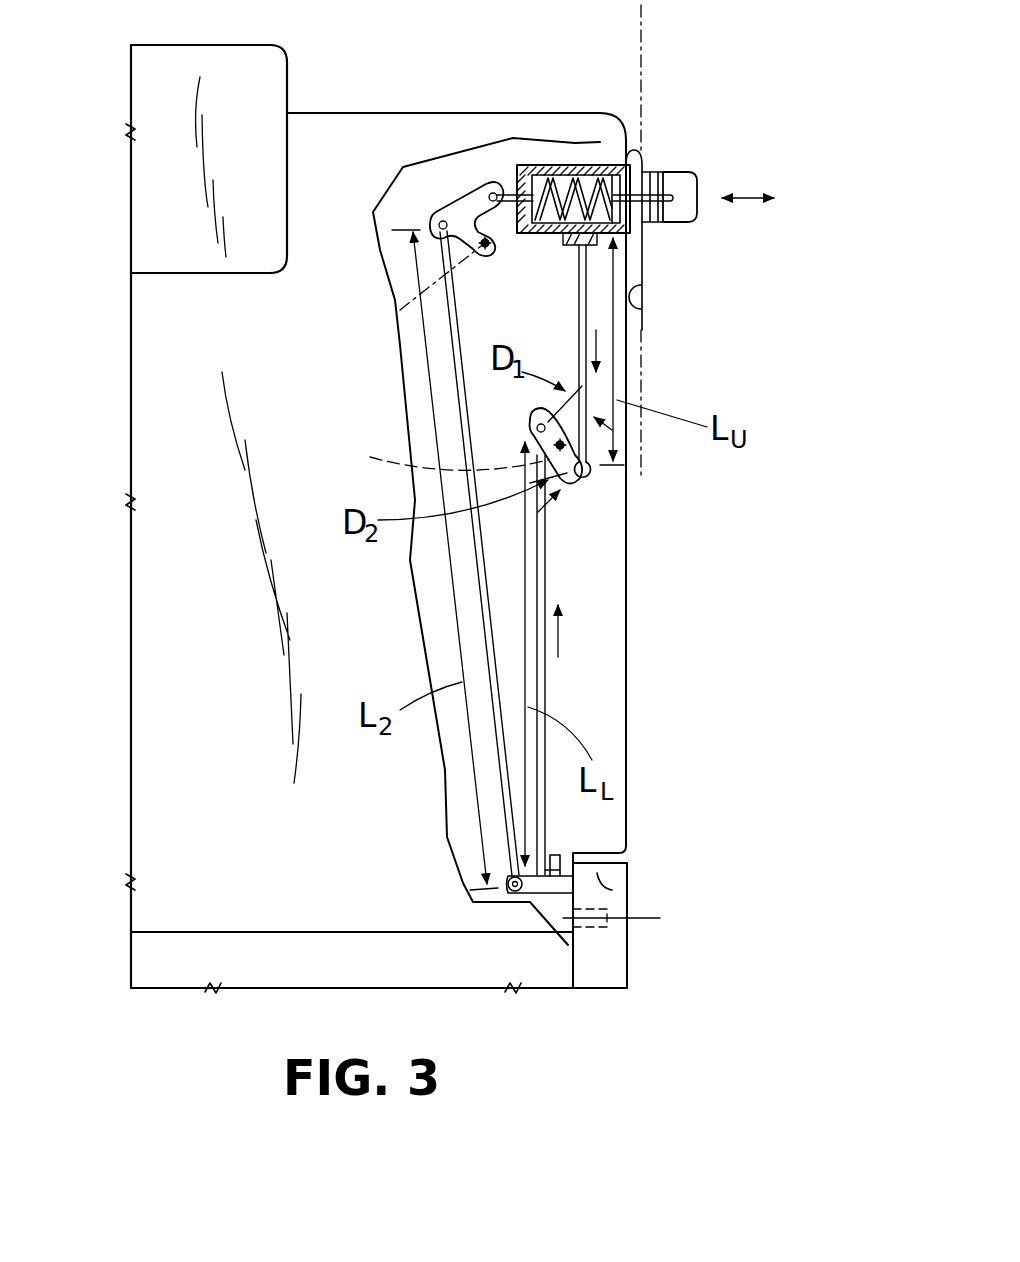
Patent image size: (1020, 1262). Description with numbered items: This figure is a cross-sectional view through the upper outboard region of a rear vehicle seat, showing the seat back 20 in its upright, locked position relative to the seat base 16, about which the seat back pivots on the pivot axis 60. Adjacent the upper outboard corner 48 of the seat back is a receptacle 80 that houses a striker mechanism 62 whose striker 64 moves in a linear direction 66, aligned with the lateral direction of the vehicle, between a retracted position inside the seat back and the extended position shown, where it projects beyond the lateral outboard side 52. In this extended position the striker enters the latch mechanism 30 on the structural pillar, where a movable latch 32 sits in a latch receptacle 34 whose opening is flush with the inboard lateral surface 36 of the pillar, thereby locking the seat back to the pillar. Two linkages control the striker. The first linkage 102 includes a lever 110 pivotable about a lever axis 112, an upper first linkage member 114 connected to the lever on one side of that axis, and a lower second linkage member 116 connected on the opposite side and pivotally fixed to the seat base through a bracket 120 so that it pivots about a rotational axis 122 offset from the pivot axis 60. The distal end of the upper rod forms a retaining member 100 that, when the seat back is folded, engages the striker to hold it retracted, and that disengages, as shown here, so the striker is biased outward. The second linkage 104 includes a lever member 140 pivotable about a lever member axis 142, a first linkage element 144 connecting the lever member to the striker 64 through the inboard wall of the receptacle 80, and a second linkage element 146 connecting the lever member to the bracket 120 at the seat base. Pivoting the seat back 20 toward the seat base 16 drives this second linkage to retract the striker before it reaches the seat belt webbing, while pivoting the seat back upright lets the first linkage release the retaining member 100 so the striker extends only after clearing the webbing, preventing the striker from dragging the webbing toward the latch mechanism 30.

The seat back 20 is at (165, 583).
The lateral outboard side 52 is at (630, 655).
The upper outboard corner 48 is at (605, 118).
The striker mechanism 62 is at (636, 152).
The inboard lateral surface 36 is at (640, 312).
The latch mechanism 30 is at (670, 178).
The latch receptacle 34 is at (690, 212).
The striker 64 is at (703, 186).
The latch 32 is at (667, 222).
The linear direction 66 is at (748, 196).
The receptacle 80 is at (577, 173).
The first linkage element 144 is at (512, 195).
The second linkage 104 is at (452, 188).
The lever member 140 is at (432, 257).
The lever member axis 142 is at (455, 296).
The second linkage element 146 is at (455, 358).
The retaining member 100 is at (565, 245).
The first linkage member 114 is at (575, 318).
The lever 110 is at (520, 412).
The lever axis 112 is at (431, 455).
The first linkage 102 is at (597, 493).
The second linkage member 116 is at (545, 676).
The bracket 120 is at (555, 894).
The rotational axis 122 is at (612, 890).
The pivot axis 60 is at (605, 918).
The seat base 16 is at (615, 970).